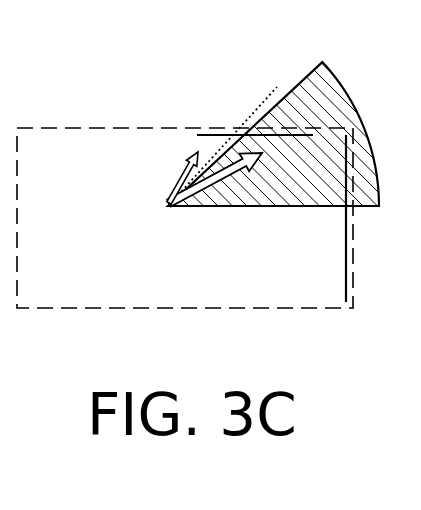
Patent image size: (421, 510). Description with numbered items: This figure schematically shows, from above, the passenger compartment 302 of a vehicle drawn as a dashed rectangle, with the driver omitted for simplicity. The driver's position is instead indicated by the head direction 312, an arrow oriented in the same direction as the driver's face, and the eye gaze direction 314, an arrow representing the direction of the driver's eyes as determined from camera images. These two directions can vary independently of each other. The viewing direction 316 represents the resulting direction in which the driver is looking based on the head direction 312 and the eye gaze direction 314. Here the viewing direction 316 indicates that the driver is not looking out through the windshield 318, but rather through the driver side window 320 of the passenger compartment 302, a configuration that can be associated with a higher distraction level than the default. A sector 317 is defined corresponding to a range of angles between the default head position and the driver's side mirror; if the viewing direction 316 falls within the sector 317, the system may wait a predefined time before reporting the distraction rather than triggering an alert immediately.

The passenger compartment 302 is at (65, 156).
The head direction 312 is at (200, 207).
The eye gaze direction 314 is at (167, 198).
The viewing direction 316 is at (256, 103).
The sector 317 is at (302, 80).
The windshield 318 is at (345, 265).
The driver side window 320 is at (206, 133).